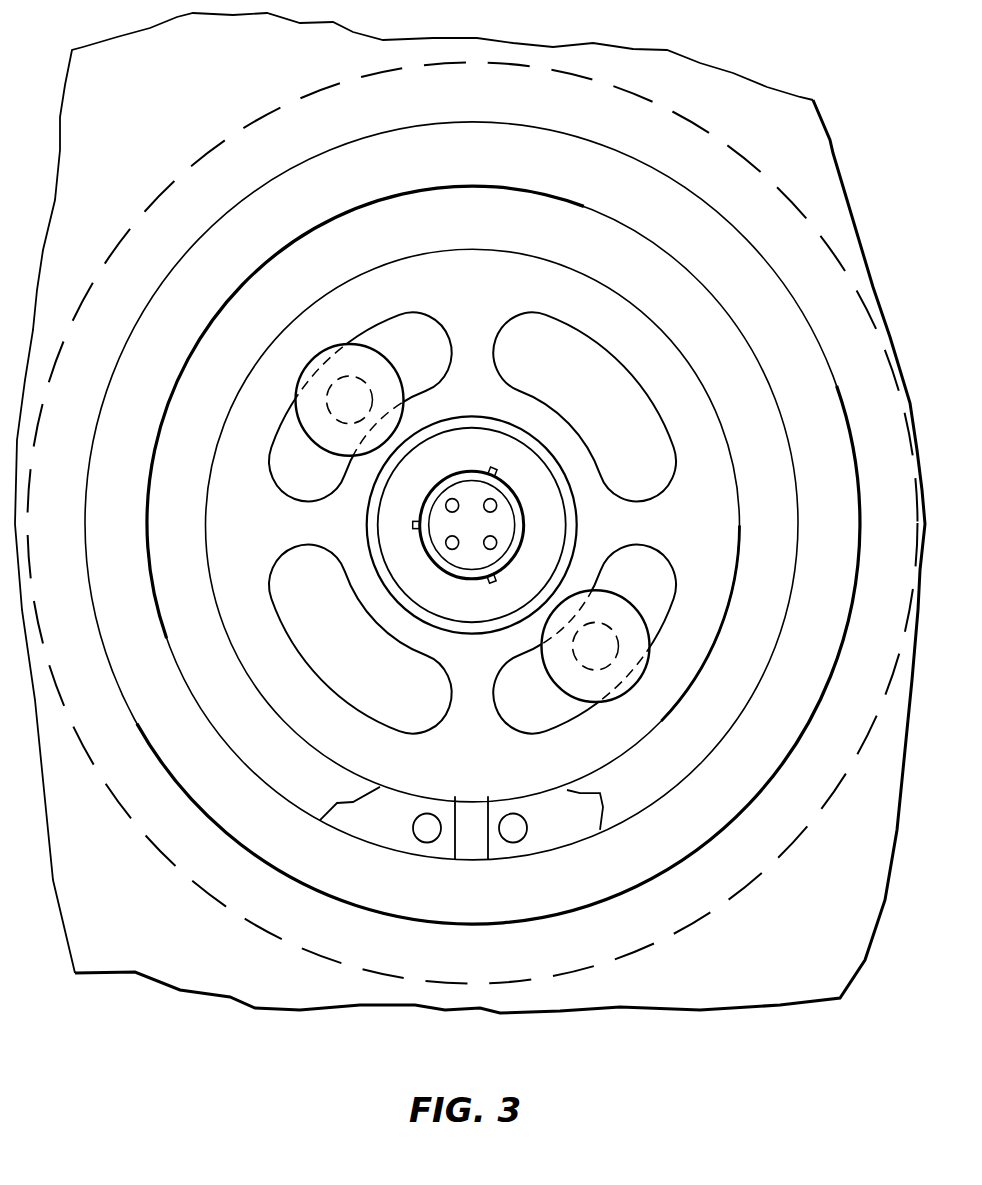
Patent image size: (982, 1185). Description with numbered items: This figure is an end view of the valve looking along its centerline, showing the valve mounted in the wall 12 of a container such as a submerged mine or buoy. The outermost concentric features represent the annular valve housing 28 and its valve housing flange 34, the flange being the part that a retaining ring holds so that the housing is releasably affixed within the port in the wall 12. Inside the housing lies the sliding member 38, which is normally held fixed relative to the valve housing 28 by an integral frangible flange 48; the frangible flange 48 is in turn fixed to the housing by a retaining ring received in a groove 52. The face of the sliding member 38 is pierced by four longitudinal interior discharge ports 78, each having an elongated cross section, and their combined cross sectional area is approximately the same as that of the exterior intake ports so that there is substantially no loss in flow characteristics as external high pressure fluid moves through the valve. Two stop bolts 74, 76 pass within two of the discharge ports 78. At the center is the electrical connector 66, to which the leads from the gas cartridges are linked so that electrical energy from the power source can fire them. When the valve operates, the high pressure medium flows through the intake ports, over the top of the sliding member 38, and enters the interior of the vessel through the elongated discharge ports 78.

The wall 12 is at (403, 48).
The valve housing 28 is at (652, 222).
The valve housing flange 34 is at (576, 957).
The sliding member 38 is at (643, 382).
The frangible flange 48 is at (638, 297).
The groove 52 is at (536, 834).
The electrical connector 66 is at (458, 524).
The stop bolt 74 is at (314, 385).
The stop bolt 76 is at (643, 673).
The discharge ports 78 is at (586, 422).